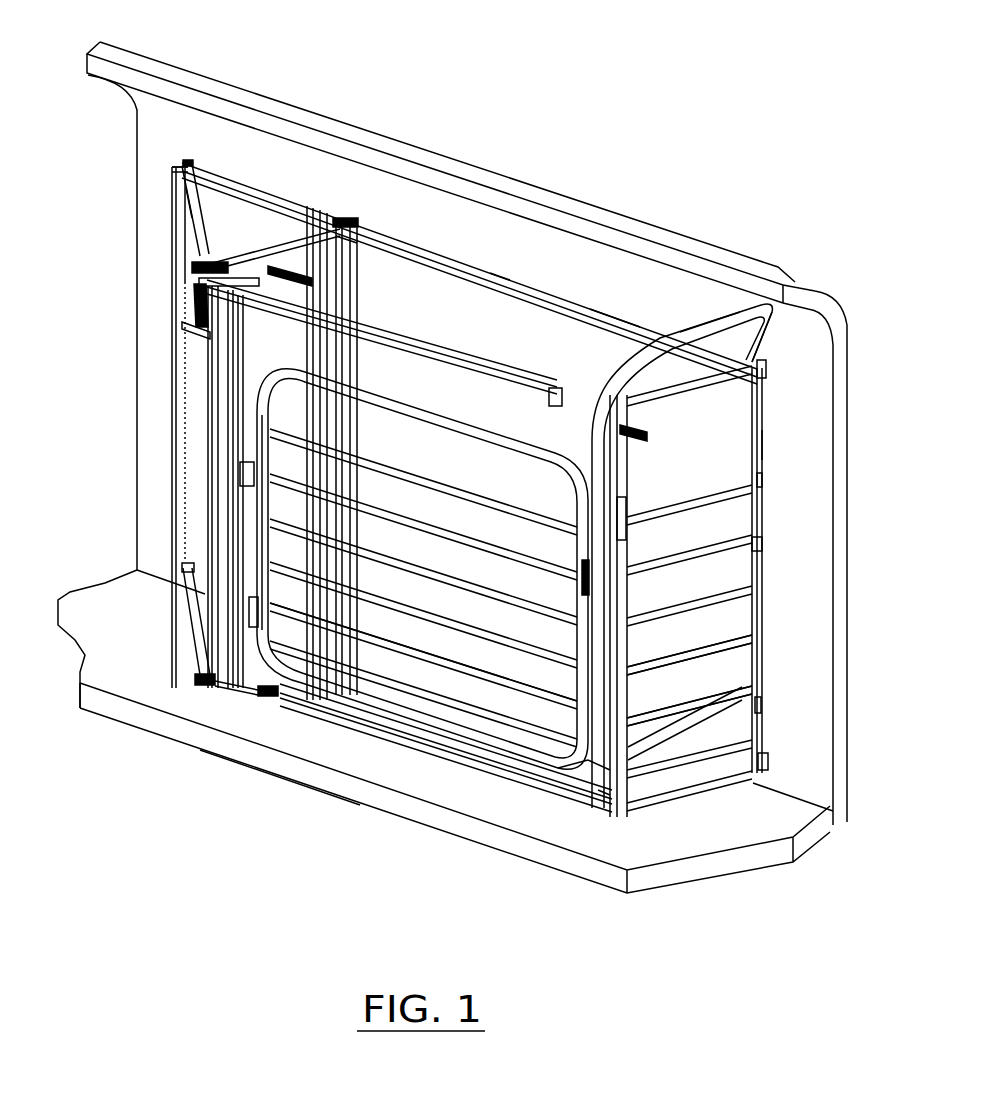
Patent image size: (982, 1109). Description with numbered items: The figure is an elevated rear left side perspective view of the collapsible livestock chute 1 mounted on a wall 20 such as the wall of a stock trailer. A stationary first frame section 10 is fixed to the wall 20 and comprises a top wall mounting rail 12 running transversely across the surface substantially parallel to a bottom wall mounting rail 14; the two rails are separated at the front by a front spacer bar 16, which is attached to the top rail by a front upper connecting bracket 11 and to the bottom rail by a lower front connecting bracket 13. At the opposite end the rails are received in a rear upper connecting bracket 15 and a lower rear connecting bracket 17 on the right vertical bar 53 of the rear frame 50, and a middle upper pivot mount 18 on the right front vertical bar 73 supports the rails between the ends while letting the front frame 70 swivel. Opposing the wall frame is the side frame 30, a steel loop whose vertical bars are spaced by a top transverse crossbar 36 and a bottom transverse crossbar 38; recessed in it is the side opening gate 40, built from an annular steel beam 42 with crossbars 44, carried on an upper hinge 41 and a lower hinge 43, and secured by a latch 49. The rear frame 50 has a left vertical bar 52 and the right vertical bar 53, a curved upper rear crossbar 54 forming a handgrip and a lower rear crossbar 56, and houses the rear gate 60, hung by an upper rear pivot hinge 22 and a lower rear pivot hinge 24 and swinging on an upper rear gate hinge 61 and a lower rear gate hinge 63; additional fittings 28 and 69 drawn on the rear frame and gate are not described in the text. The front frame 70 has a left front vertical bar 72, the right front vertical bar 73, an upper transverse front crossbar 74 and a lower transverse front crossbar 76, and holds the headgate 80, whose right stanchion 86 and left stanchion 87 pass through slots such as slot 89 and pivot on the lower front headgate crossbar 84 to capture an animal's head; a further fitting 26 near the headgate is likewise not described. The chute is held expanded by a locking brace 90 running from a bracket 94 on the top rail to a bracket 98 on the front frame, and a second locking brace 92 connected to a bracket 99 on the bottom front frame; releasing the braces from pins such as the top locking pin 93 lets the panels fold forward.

The collapsible livestock chute 1 is at (766, 442).
The first frame section 10 is at (340, 358).
The front upper connecting bracket 11 is at (203, 168).
The top wall mounting rail 12 is at (617, 315).
The lower front connecting bracket 13 is at (187, 567).
The bottom wall mounting rail 14 is at (760, 690).
The rear upper connecting bracket 15 is at (767, 343).
The front spacer bar 16 is at (173, 200).
The lower rear connecting bracket 17 is at (765, 752).
The middle upper pivot mount 18 is at (353, 225).
The wall 20 is at (600, 220).
The upper rear pivot hinge 22 is at (762, 480).
The lower rear pivot hinge 24 is at (762, 707).
The latch bar 26 is at (185, 328).
The latch handle 28 is at (640, 445).
The side frame 30 is at (247, 363).
The top transverse crossbar 36 is at (493, 373).
The bottom transverse crossbar 38 is at (368, 740).
The side opening gate 40 is at (275, 698).
The upper hinge 41 is at (557, 397).
The annular steel beam 42 is at (343, 710).
The lower hinge 43 is at (617, 700).
The crossbars 44 is at (450, 637).
The latch 49 is at (242, 478).
The rear frame 50 is at (737, 322).
The left vertical bar 52 is at (577, 712).
The right vertical bar 53 is at (762, 653).
The upper rear crossbar 54 is at (717, 327).
The lower rear crossbar 56 is at (710, 780).
The rear gate 60 is at (762, 396).
The upper rear gate hinge 61 is at (627, 513).
The lower rear gate hinge 63 is at (633, 752).
The middle hinge 69 is at (762, 540).
The front frame 70 is at (200, 253).
The left front vertical bar 72 is at (208, 635).
The right front vertical bar 73 is at (500, 273).
The upper transverse front crossbar 74 is at (340, 218).
The lower transverse front crossbar 76 is at (293, 745).
The headgate 80 is at (207, 349).
The lower front headgate crossbar 84 is at (318, 710).
The right stanchion 86 is at (357, 238).
The left stanchion 87 is at (257, 257).
The slot 89 is at (345, 243).
The locking brace 90 is at (205, 183).
The second locking brace 92 is at (190, 615).
The top locking pin 93 is at (187, 162).
The bracket 94 is at (198, 165).
The bracket 98 is at (203, 272).
The bracket 99 is at (200, 680).